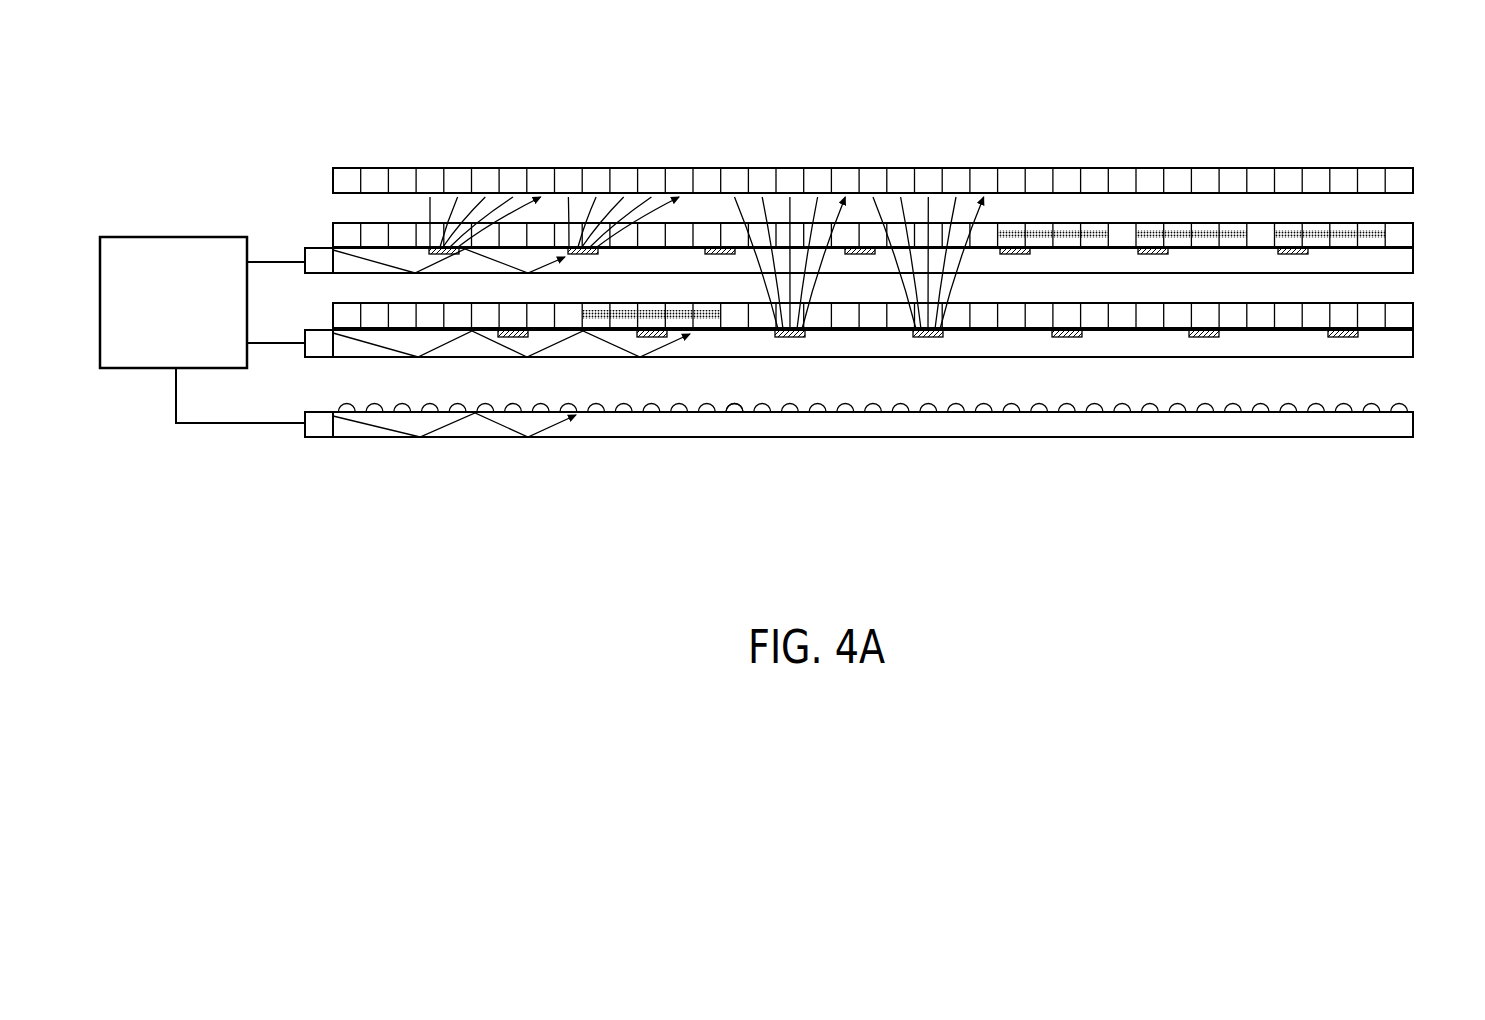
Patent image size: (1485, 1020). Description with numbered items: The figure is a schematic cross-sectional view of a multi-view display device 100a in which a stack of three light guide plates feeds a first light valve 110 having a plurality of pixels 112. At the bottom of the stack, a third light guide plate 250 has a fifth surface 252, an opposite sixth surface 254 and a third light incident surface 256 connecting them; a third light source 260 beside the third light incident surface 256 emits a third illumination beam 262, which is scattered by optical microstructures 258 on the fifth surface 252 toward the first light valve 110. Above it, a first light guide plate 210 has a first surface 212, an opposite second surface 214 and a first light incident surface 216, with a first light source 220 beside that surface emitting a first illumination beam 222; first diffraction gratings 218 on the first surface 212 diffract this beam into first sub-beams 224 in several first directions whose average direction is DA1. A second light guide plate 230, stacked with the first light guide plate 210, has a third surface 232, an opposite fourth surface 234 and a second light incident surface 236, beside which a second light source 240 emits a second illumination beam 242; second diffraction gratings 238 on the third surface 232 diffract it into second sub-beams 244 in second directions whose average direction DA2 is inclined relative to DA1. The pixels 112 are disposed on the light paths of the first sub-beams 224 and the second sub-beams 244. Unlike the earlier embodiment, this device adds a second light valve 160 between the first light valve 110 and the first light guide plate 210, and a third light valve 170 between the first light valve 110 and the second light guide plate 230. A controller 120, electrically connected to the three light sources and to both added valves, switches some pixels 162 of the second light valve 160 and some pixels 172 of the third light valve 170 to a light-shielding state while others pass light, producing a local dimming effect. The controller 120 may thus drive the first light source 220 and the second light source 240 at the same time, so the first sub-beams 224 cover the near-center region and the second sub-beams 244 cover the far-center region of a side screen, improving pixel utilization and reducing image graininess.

The multi-view display device 100a is at (1460, 571).
The first light valve 110 is at (1413, 180).
The pixels 112 is at (1345, 180).
The controller 120 is at (180, 236).
The second light valve 160 is at (1413, 312).
The pixels 162 is at (706, 308).
The third light valve 170 is at (1413, 235).
The pixels 172 is at (1373, 227).
The first light guide plate 210 is at (1392, 345).
The first surface 212 is at (1098, 326).
The second surface 214 is at (1108, 359).
The first light incident surface 216 is at (330, 341).
The first diffraction gratings 218 is at (938, 338).
The first light source 220 is at (305, 346).
The first illumination beam 222 is at (678, 343).
The first sub-beams 224 is at (787, 225).
The second light guide plate 230 is at (1392, 263).
The third surface 232 is at (1232, 246).
The fourth surface 234 is at (1243, 276).
The second light incident surface 236 is at (330, 259).
The second diffraction gratings 238 is at (428, 254).
The second light source 240 is at (305, 258).
The second illumination beam 242 is at (570, 257).
The second sub-beams 244 is at (444, 256).
The third light guide plate 250 is at (1392, 425).
The fifth surface 252 is at (833, 403).
The sixth surface 254 is at (835, 439).
The third light incident surface 256 is at (331, 421).
The optical microstructures 258 is at (733, 413).
The third light source 260 is at (305, 432).
The third illumination beam 262 is at (553, 425).
The average direction of the first directions DA1 is at (783, 300).
The average direction of the second directions DA2 is at (590, 260).